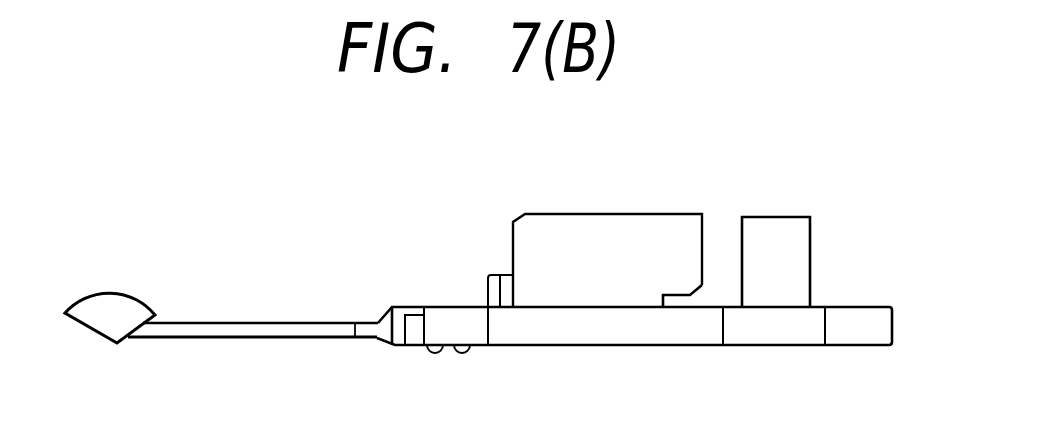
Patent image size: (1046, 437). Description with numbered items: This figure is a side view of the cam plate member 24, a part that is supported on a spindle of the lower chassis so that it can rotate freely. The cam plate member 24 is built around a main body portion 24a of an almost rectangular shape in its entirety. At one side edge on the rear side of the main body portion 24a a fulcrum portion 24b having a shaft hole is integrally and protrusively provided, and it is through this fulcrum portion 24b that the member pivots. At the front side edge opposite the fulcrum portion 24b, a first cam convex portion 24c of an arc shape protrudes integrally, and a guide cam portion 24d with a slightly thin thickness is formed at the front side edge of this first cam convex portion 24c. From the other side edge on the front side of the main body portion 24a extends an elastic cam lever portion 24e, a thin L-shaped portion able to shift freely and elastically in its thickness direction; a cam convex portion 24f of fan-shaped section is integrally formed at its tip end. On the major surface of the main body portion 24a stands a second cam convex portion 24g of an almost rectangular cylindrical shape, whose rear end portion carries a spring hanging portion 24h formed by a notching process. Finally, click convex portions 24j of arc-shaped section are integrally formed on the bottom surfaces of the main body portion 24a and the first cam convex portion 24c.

The cam plate member 24 is at (298, 167).
The main body portion 24a is at (595, 332).
The fulcrum portion 24b is at (787, 335).
The first cam convex portion 24c is at (456, 320).
The guide cam portion 24d is at (395, 345).
The elastic cam lever portion 24e is at (283, 323).
The cam convex portion 24f is at (115, 305).
The second cam convex portion 24g is at (610, 237).
The spring hanging portion 24h is at (673, 297).
The click convex portion 24j is at (493, 275).